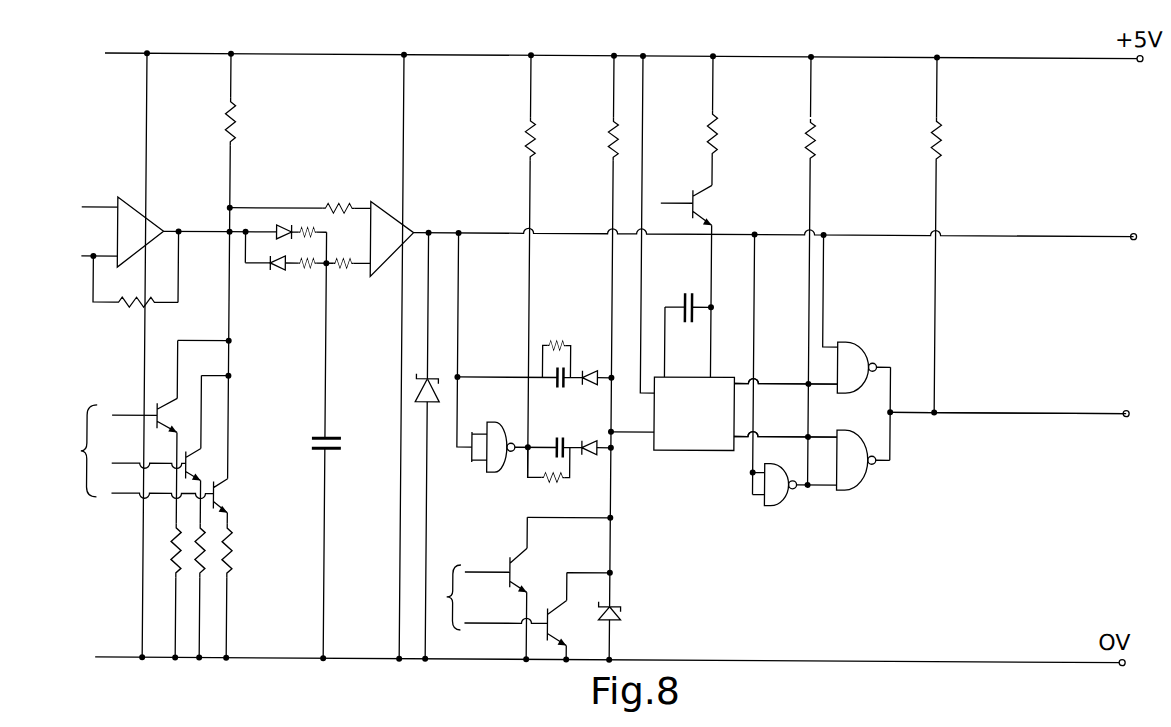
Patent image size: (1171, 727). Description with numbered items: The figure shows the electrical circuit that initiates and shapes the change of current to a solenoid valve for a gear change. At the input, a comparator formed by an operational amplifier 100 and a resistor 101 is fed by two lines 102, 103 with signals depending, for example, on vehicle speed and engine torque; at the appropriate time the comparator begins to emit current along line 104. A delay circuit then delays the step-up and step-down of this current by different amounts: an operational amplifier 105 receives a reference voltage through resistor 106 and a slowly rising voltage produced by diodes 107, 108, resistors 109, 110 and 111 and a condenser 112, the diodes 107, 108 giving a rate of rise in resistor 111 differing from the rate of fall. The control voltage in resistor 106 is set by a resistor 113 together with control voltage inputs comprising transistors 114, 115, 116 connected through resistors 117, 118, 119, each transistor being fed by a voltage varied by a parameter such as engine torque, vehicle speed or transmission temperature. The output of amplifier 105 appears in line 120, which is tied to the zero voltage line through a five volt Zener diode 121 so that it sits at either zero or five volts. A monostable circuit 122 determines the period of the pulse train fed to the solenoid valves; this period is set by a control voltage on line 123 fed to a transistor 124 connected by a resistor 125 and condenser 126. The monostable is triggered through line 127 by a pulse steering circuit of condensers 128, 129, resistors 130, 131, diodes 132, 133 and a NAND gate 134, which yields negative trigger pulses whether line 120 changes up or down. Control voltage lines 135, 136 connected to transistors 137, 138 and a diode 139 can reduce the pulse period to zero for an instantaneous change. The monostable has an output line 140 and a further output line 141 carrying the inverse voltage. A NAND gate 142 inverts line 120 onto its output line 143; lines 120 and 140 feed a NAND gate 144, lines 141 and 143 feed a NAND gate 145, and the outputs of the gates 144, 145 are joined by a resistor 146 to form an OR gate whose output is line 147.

The operational amplifier 100 is at (149, 227).
The resistor 101 is at (128, 304).
The line 102 is at (87, 203).
The line 103 is at (85, 253).
The line 104 is at (196, 234).
The operational amplifier 105 is at (379, 205).
The resistor 106 is at (334, 205).
The diode 107 is at (285, 268).
The diode 108 is at (287, 223).
The resistor 109 is at (322, 224).
The resistor 110 is at (308, 270).
The resistor 111 is at (350, 270).
The condenser 112 is at (347, 445).
The resistor 113 is at (237, 124).
The transistor 114 is at (226, 491).
The transistor 115 is at (197, 462).
The transistor 116 is at (164, 412).
The resistor 117 is at (238, 548).
The resistor 118 is at (206, 563).
The resistor 119 is at (174, 566).
The line 120 is at (442, 230).
The Zener diode 121 is at (418, 391).
The monostable circuit 122 is at (686, 421).
The line 123 is at (665, 198).
The transistor 124 is at (705, 194).
The resistor 125 is at (722, 132).
The condenser 126 is at (696, 289).
The line 127 is at (462, 312).
The condenser 128 is at (566, 383).
The condenser 129 is at (569, 428).
The resistor 130 is at (554, 340).
The resistor 131 is at (544, 484).
The diode 132 is at (593, 368).
The diode 133 is at (591, 457).
The NAND gate 134 is at (496, 472).
The control voltage line 135 is at (488, 569).
The control voltage line 136 is at (493, 622).
The transistor 137 is at (517, 569).
The transistor 138 is at (577, 625).
The diode 139 is at (626, 612).
The output line 140 is at (777, 379).
The output line 141 is at (782, 432).
The NAND gate 142 is at (780, 503).
The output line 143 is at (823, 490).
The NAND gate 144 is at (862, 345).
The NAND gate 145 is at (866, 476).
The resistor 146 is at (951, 131).
The line 147 is at (998, 411).